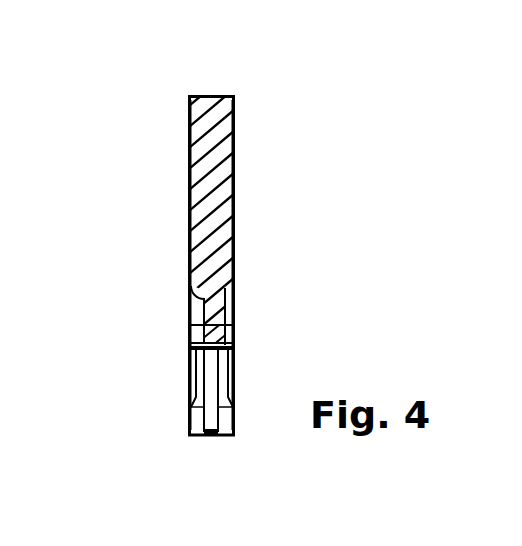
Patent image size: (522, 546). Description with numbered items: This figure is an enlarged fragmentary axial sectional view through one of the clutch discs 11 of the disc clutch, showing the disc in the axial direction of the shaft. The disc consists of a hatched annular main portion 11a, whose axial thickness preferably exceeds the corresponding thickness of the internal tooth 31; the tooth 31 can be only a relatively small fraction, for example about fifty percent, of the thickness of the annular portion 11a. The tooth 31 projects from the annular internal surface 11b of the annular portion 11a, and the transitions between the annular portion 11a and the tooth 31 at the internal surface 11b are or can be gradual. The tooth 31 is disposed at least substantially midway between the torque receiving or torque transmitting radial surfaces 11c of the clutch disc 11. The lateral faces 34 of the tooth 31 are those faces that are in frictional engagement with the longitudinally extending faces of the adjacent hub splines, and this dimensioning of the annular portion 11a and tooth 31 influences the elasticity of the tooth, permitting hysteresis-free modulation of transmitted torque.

The clutch disc 11 is at (243, 77).
The annular main portion 11a is at (222, 131).
The annular internal surface 11b is at (233, 302).
The radial surfaces 11c is at (188, 170).
The internal teeth 31 is at (229, 348).
The lateral faces 34 is at (170, 334).